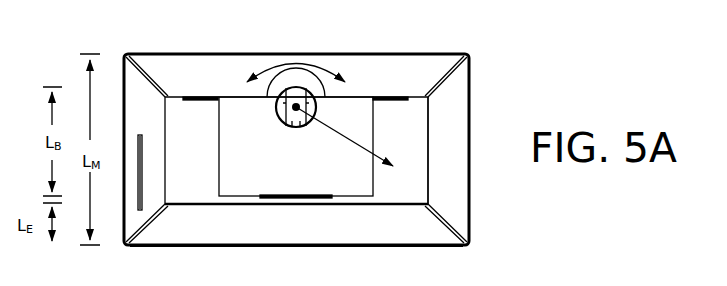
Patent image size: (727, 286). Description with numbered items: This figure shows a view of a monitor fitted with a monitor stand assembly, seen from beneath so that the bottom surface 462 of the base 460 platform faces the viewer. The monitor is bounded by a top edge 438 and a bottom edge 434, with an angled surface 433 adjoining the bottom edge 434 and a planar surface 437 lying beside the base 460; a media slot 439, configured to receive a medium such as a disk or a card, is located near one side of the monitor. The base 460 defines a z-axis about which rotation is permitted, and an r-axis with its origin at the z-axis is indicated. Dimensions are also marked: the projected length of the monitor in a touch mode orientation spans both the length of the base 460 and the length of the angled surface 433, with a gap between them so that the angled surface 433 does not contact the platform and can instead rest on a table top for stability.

The angled surface 433 is at (308, 235).
The bottom edge 434 is at (152, 249).
The planar surface 437 is at (413, 137).
The top edge 438 is at (150, 53).
The media slot 439 is at (140, 176).
The base 460 is at (292, 80).
The bottom surface 462 is at (310, 172).